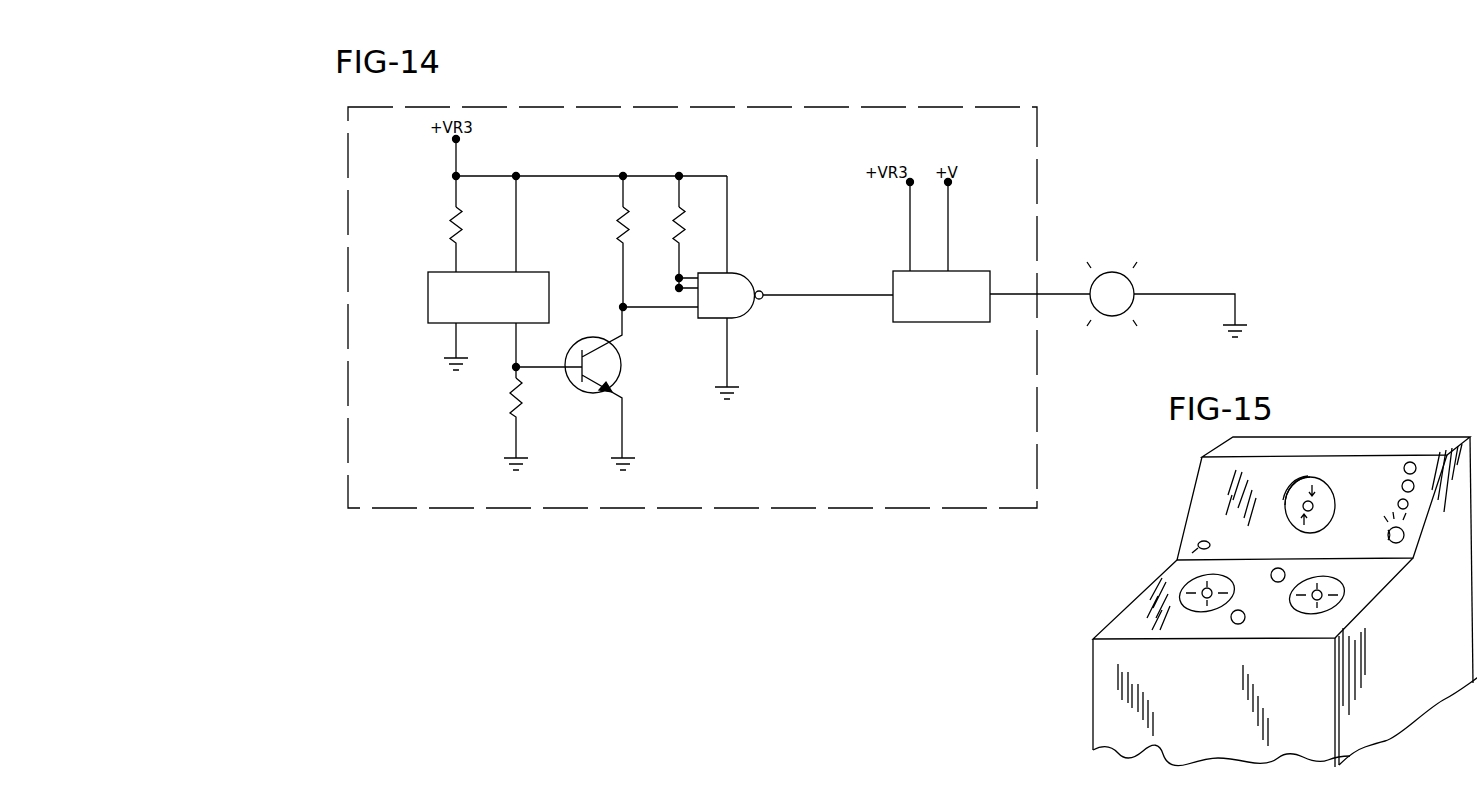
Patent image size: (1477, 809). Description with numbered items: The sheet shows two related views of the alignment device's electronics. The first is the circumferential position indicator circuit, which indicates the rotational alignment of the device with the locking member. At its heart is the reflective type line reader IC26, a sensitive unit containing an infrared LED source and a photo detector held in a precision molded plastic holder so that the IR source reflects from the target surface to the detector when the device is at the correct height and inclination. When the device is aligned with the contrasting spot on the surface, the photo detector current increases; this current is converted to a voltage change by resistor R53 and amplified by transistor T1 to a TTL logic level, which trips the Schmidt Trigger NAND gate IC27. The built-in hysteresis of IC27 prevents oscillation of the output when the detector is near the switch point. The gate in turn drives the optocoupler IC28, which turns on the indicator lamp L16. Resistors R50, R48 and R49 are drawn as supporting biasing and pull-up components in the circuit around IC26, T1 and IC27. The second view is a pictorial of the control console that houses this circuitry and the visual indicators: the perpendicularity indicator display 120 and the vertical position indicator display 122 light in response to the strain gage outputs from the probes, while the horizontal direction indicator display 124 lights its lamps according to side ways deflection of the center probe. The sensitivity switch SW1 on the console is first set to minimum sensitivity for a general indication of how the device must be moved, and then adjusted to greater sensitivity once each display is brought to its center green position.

In FIG. 14, the resistor R50 is at (473, 239).
In FIG. 14, the resistor R48 is at (602, 257).
In FIG. 14, the resistor R49 is at (696, 247).
In FIG. 14, the resistor R53 is at (534, 418).
In FIG. 14, the transistor T1 is at (607, 382).
In FIG. 14, the reflective type line reader IC26 is at (488, 297).
In FIG. 14, the Schmidt Trigger NAND gate IC27 is at (747, 287).
In FIG. 14, the optocoupler IC28 is at (941, 296).
In FIG. 14, the indicator lamp L16 is at (1129, 294).
In FIG. 15, the perpendicularity indicator display 120 is at (1213, 608).
In FIG. 15, the vertical position indicator display 122 is at (1325, 499).
In FIG. 15, the horizontal direction indicator display 124 is at (1340, 600).
In FIG. 15, the sensitivity switch SW1 is at (1385, 536).